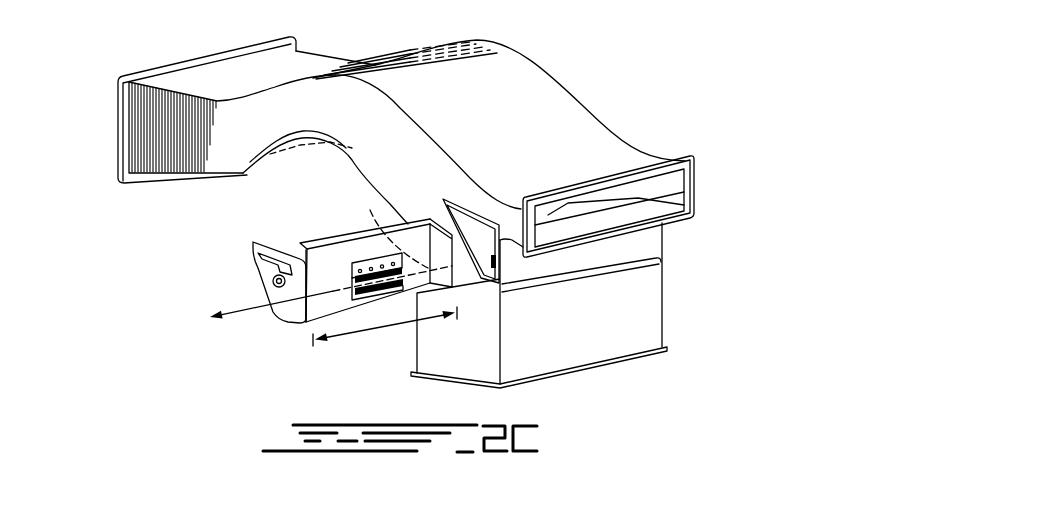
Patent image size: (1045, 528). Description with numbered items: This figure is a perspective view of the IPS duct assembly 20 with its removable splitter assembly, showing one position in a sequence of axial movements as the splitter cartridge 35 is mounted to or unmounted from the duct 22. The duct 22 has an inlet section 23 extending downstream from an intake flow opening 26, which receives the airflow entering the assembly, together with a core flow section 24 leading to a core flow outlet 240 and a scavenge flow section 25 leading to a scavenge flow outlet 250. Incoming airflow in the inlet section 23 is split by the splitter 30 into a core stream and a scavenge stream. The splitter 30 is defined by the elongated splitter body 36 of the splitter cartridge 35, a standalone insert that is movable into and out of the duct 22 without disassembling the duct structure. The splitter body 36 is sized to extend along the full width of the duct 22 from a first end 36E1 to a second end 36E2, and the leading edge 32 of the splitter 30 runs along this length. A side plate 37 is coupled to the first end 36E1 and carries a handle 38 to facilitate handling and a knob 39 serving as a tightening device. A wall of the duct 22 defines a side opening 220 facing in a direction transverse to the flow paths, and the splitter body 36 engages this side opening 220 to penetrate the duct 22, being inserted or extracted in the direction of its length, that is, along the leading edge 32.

The IPS duct assembly 20 is at (745, 78).
The duct 22 is at (245, 74).
The inlet section 23 is at (266, 184).
The core flow section 24 is at (395, 307).
The scavenge flow section 25 is at (609, 108).
The intake flow opening 26 is at (104, 93).
The splitter 30 is at (399, 289).
The leading edge 32 is at (302, 243).
The splitter cartridge 35 is at (415, 315).
The splitter body 36 is at (330, 303).
The first end 36E1 is at (318, 331).
The second end 36E2 is at (465, 299).
The side plate 37 is at (289, 316).
The handle 38 is at (253, 258).
The knob 39 is at (268, 284).
The side opening 220 is at (488, 285).
The core flow outlet 240 is at (634, 371).
The scavenge flow outlet 250 is at (708, 191).